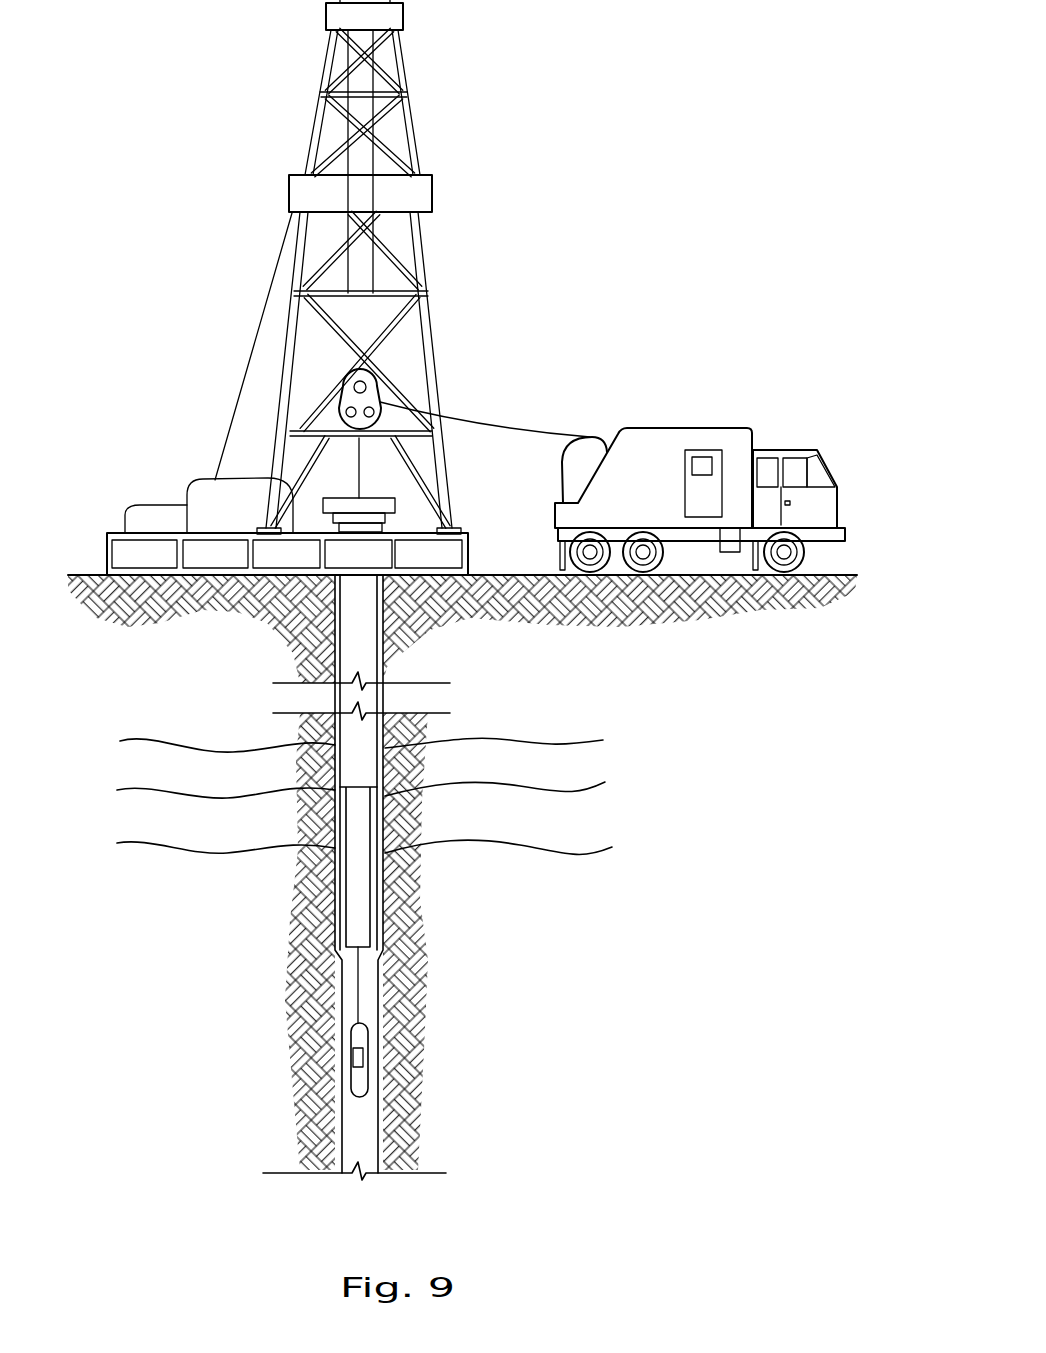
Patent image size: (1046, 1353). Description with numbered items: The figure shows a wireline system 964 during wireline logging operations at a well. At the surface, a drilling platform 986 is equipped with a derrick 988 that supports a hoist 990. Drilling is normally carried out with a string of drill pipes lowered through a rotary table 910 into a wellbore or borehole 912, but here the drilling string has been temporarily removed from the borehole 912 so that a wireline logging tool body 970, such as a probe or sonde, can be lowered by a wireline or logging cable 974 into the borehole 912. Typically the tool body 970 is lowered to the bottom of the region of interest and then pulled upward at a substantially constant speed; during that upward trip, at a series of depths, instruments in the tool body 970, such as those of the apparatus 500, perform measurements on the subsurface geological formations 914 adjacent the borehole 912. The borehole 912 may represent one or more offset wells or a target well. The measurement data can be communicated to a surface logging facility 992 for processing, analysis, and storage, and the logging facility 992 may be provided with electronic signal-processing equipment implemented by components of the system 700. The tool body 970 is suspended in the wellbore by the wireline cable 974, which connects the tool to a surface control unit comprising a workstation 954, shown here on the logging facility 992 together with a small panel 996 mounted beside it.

The wireline system 964 is at (631, 190).
The hoist 990 is at (370, 388).
The wireline or logging cable 974 is at (478, 415).
The surface logging facility 992 is at (645, 428).
The display / computing unit 996 is at (703, 456).
The workstation 954 is at (683, 495).
The rotary table 910 is at (395, 497).
The derrick 988 is at (452, 527).
The drilling platform 986 is at (469, 552).
The subsurface geological formations 914 is at (623, 733).
The wellbore or borehole 912 is at (342, 975).
The wireline logging tool body 970 is at (364, 1030).
The apparatus 500 is at (453, 1048).
The system 700 is at (371, 1057).